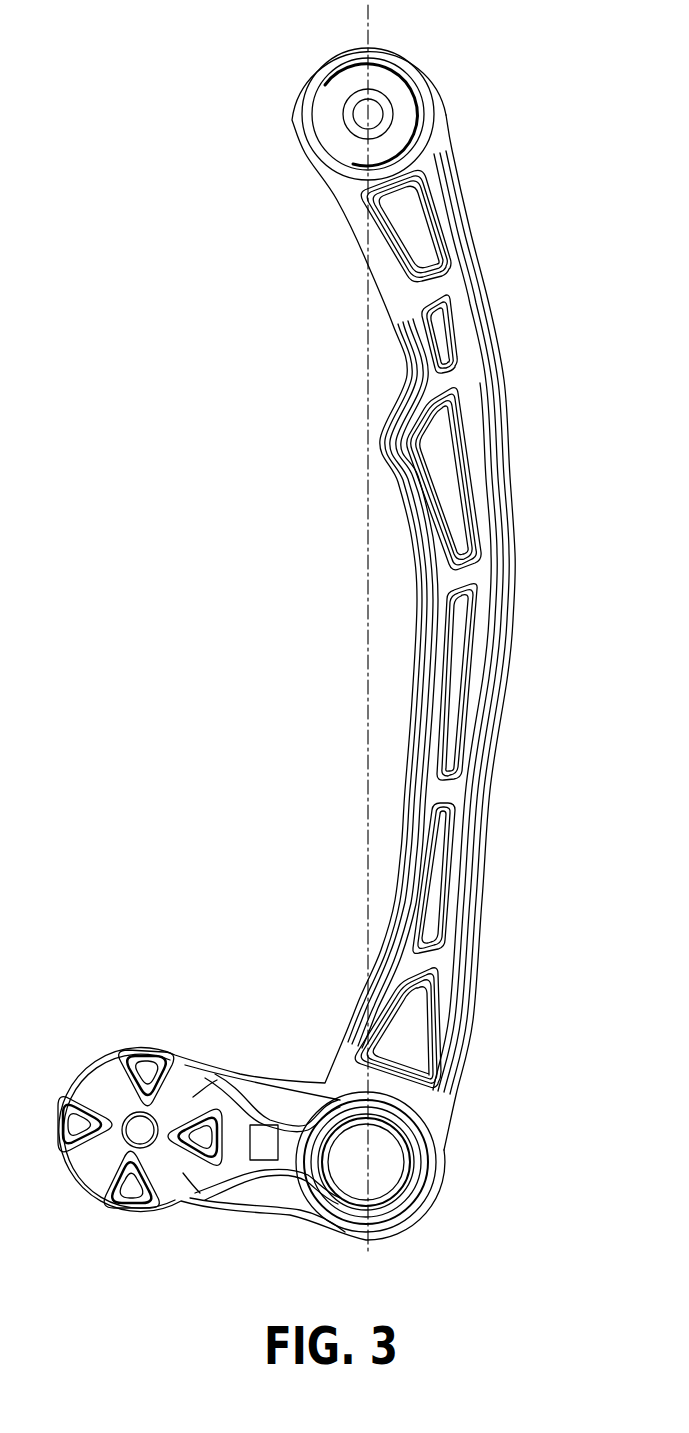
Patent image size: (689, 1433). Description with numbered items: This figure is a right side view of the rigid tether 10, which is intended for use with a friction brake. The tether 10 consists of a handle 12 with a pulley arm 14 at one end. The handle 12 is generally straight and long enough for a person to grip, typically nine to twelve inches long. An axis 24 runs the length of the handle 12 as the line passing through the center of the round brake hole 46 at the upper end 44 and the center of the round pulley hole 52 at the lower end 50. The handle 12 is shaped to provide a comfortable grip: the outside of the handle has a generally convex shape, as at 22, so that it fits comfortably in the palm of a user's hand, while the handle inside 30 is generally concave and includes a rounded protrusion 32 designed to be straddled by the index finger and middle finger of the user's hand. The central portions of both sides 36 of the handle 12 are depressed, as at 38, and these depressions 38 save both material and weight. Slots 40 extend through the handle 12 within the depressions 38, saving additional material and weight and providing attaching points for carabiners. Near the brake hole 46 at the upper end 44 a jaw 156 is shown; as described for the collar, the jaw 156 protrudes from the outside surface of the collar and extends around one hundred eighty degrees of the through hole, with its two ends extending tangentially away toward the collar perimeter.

The tether 10 is at (240, 44).
The handle 12 is at (466, 178).
The pulley arm 14 is at (290, 1070).
The convex shape 22 is at (518, 560).
The axis 24 is at (366, 592).
The handle inside 30 is at (405, 375).
The rounded protrusion 32 is at (379, 444).
The sides 36 is at (497, 648).
The depressions 38 is at (452, 583).
The slots 40 is at (393, 228).
The upper end 44 is at (371, 36).
The brake hole 46 is at (373, 114).
The lower end 50 is at (372, 1243).
The pulley hole 52 is at (386, 1164).
The jaw 156 is at (353, 70).